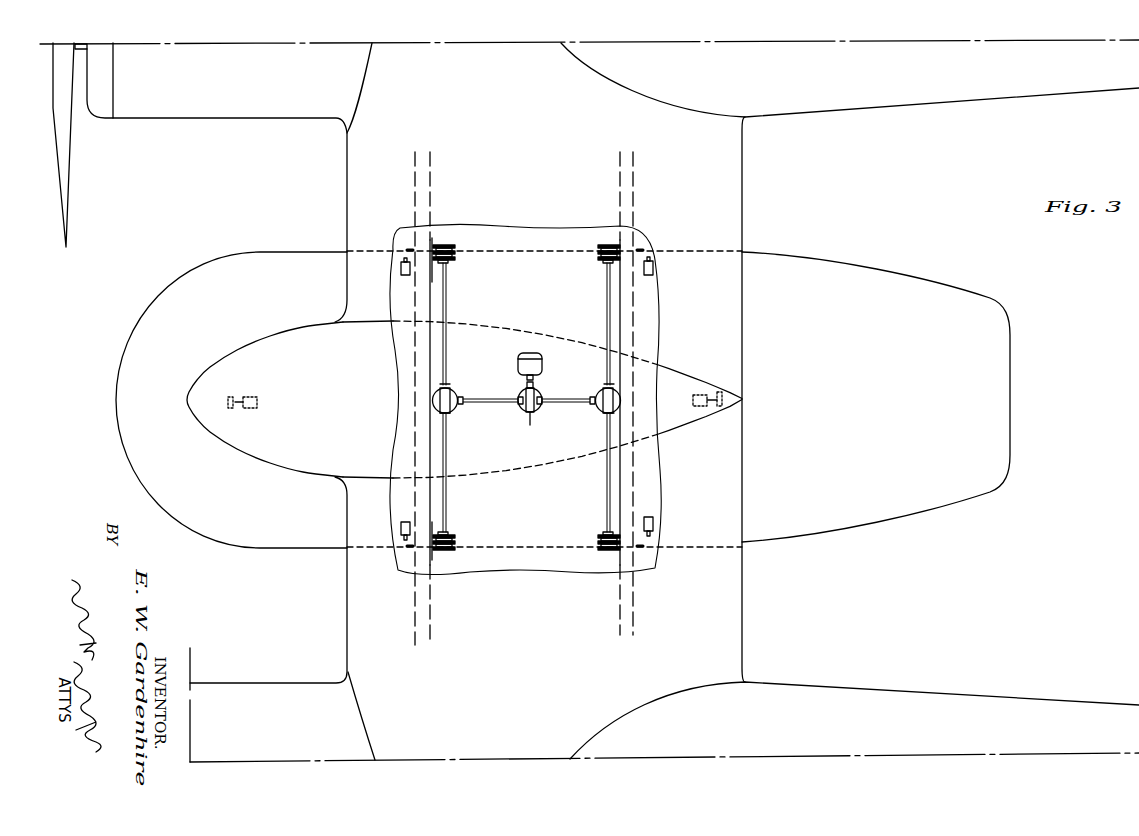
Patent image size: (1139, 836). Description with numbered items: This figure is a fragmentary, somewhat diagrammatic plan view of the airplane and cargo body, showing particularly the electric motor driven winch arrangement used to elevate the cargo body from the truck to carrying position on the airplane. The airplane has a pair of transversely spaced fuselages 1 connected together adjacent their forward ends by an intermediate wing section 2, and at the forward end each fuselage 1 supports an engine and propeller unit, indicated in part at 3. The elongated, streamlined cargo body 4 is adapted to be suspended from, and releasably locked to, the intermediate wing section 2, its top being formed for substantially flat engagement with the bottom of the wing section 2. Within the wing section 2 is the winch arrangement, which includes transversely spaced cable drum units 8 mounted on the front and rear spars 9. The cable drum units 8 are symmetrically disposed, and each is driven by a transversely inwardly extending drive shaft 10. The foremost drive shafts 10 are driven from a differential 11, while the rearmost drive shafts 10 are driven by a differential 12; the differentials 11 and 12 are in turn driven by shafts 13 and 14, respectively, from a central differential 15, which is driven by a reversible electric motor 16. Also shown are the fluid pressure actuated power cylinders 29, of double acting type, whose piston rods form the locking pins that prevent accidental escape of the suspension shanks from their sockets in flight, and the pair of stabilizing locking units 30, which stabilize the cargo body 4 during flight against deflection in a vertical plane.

The fuselage 1 is at (925, 106).
The intermediate wing section 2 is at (728, 618).
The engine and propeller unit 3 is at (153, 105).
The cargo body 4 is at (970, 310).
The cable drum unit 8 is at (448, 245).
The spar 9 is at (419, 356).
The drive shaft 10 is at (447, 305).
The differential 11 is at (450, 403).
The differential 12 is at (601, 410).
The shaft 13 is at (487, 398).
The shaft 14 is at (564, 400).
The central differential 15 is at (531, 414).
The reversible electric motor 16 is at (545, 363).
The fluid pressure actuated power cylinder 29 is at (400, 268).
The stabilizing locking unit 30 is at (252, 393).